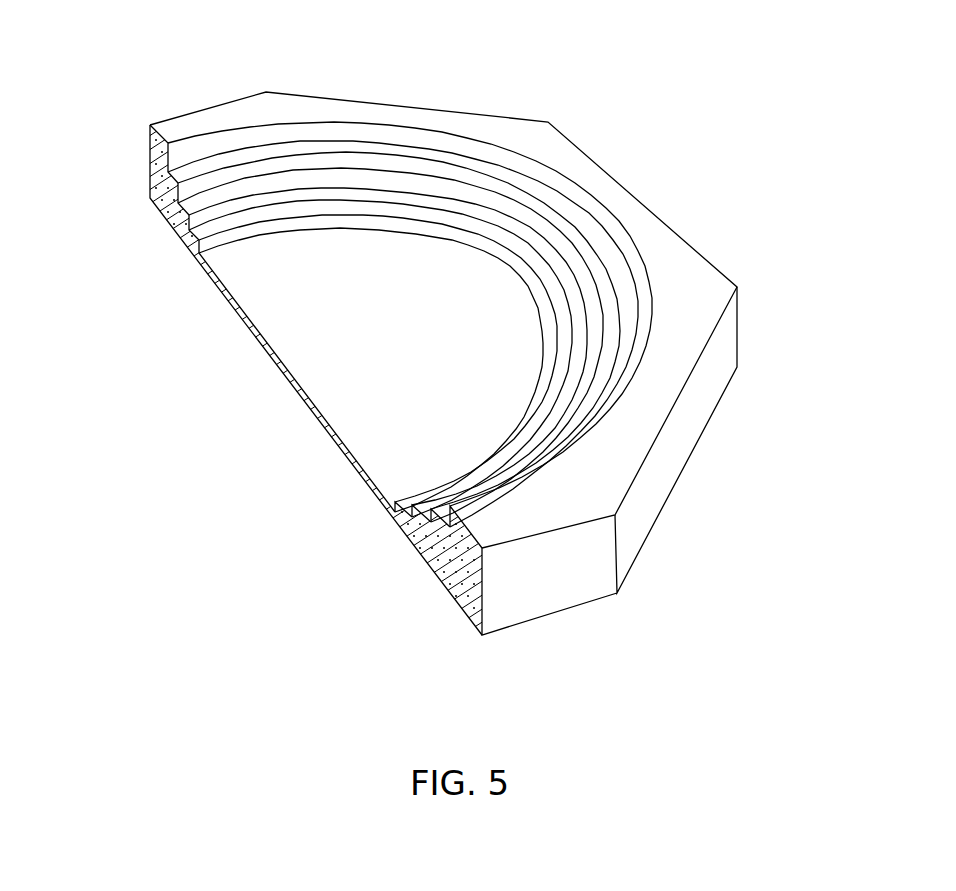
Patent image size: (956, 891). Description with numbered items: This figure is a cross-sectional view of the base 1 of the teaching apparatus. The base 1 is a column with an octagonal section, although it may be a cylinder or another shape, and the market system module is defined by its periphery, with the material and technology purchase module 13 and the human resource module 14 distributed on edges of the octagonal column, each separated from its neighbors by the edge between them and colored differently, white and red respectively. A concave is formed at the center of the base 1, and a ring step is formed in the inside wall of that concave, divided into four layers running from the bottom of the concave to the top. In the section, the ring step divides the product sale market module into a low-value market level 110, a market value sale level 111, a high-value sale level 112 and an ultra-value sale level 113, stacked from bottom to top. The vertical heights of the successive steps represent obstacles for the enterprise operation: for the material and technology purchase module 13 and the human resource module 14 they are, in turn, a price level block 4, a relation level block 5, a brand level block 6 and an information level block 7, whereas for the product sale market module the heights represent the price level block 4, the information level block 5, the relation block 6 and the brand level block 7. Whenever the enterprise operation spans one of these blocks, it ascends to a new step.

The base 1 is at (668, 207).
The price level block 4 is at (393, 506).
The relation level block 5 is at (404, 509).
The brand level block 6 is at (422, 515).
The information level block 7 is at (442, 514).
The material and technology purchase module 13 is at (618, 555).
The human resource module 14 is at (525, 117).
The low-value market level 110 is at (203, 235).
The market value sale level 111 is at (195, 202).
The high-value sale level 112 is at (190, 172).
The ultra-value sale level 113 is at (178, 137).